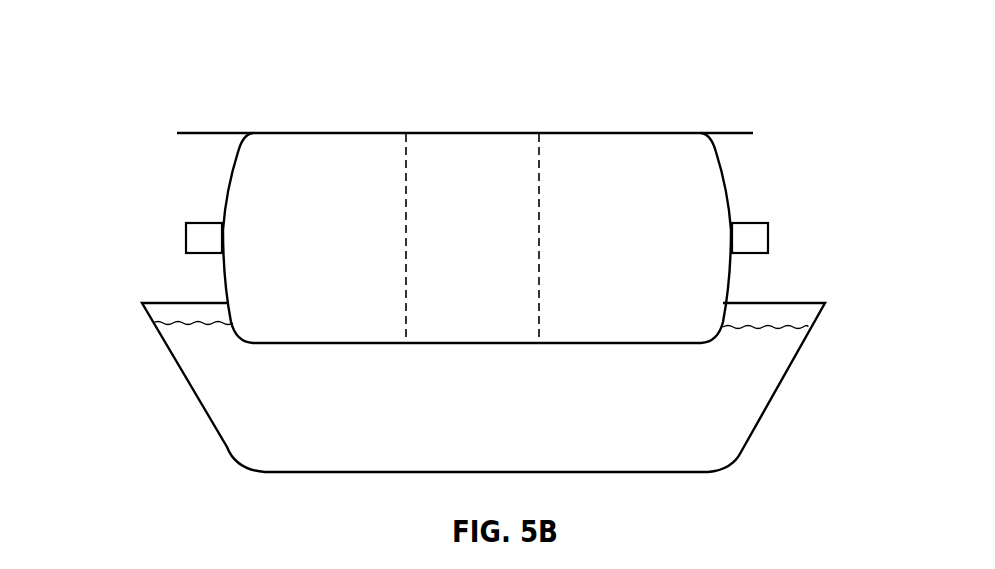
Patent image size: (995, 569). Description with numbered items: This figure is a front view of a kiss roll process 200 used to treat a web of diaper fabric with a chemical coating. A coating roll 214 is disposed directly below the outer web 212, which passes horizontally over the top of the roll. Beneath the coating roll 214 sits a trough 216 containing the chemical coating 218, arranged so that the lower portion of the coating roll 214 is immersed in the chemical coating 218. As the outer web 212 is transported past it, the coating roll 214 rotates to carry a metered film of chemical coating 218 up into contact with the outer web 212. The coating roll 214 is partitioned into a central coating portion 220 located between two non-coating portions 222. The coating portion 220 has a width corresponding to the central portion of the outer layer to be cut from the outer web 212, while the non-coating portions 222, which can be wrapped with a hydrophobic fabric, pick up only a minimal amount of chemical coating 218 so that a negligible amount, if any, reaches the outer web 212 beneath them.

The kiss roll process 200 is at (134, 57).
The outer web 212 is at (716, 132).
The coating roll 214 is at (730, 195).
The trough 216 is at (784, 302).
The chemical coating 218 is at (768, 375).
The coating portion 220 is at (458, 155).
The non-coating portions 222 is at (308, 155).